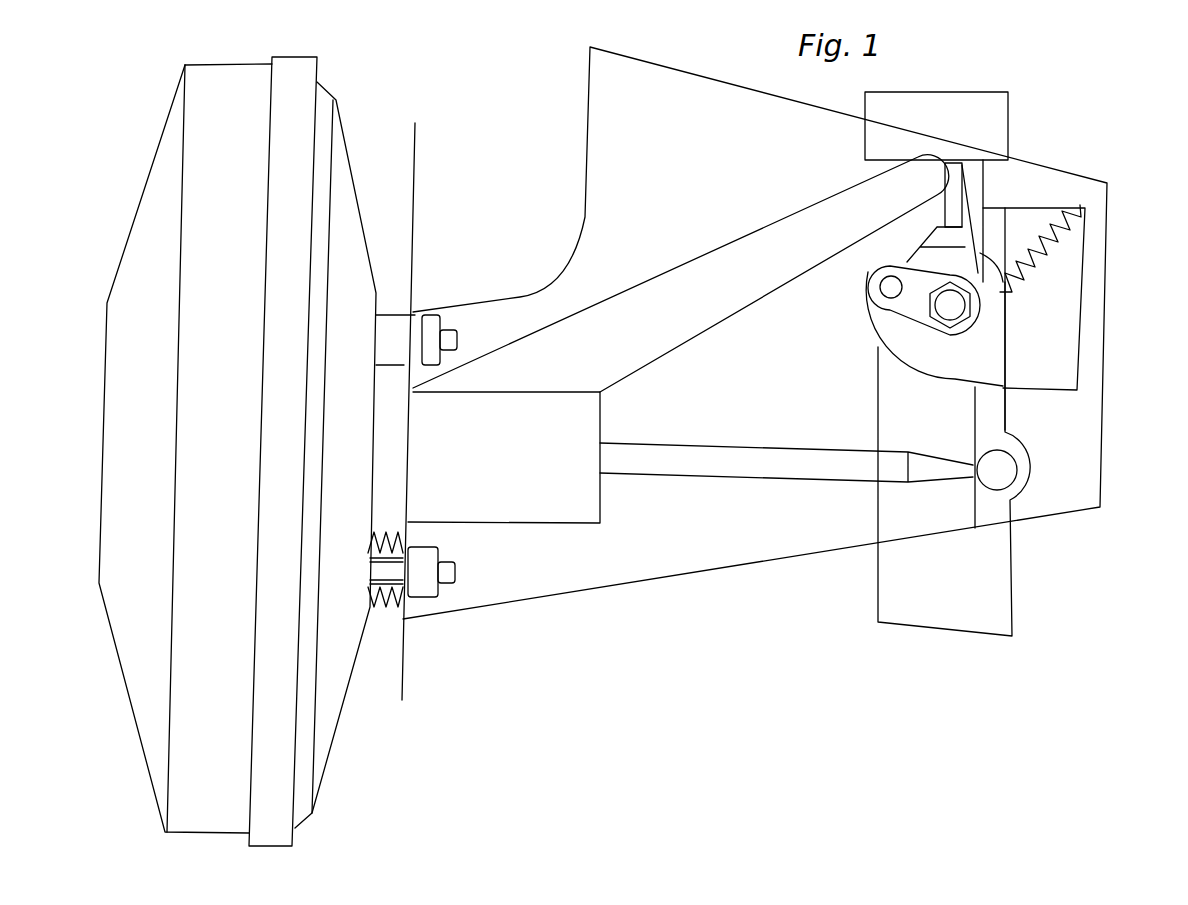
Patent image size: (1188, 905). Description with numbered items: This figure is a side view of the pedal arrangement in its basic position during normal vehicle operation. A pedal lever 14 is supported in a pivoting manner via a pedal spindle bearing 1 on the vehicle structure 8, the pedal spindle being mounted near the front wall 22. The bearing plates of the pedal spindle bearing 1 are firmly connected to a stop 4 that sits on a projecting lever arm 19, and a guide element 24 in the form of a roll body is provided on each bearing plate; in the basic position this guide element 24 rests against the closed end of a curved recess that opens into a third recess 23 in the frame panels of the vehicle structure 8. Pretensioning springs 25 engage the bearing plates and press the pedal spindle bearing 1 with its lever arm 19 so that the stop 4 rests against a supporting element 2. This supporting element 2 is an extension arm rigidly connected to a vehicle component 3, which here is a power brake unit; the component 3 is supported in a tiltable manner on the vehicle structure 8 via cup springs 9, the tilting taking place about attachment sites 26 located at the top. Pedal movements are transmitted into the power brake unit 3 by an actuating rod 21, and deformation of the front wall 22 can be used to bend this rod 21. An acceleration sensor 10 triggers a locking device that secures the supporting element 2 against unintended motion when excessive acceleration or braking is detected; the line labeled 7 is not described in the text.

The pedal spindle bearing 1 is at (895, 264).
The supporting element 2 is at (763, 273).
The vehicle component 3 is at (352, 240).
The stop 4 is at (960, 175).
The bulkhead 7 is at (388, 152).
The vehicle structure 8 is at (660, 62).
The springs 9 is at (407, 608).
The acceleration sensor 10 is at (970, 97).
The pedal lever 14 is at (893, 592).
The lever arm 19 is at (938, 221).
The actuating rod 21 is at (740, 460).
The front wall 22 is at (417, 177).
The third recess 23 is at (1070, 353).
The guide element 24 is at (880, 288).
The pretensioning springs 25 is at (1047, 262).
The attachment sites 26 is at (397, 327).